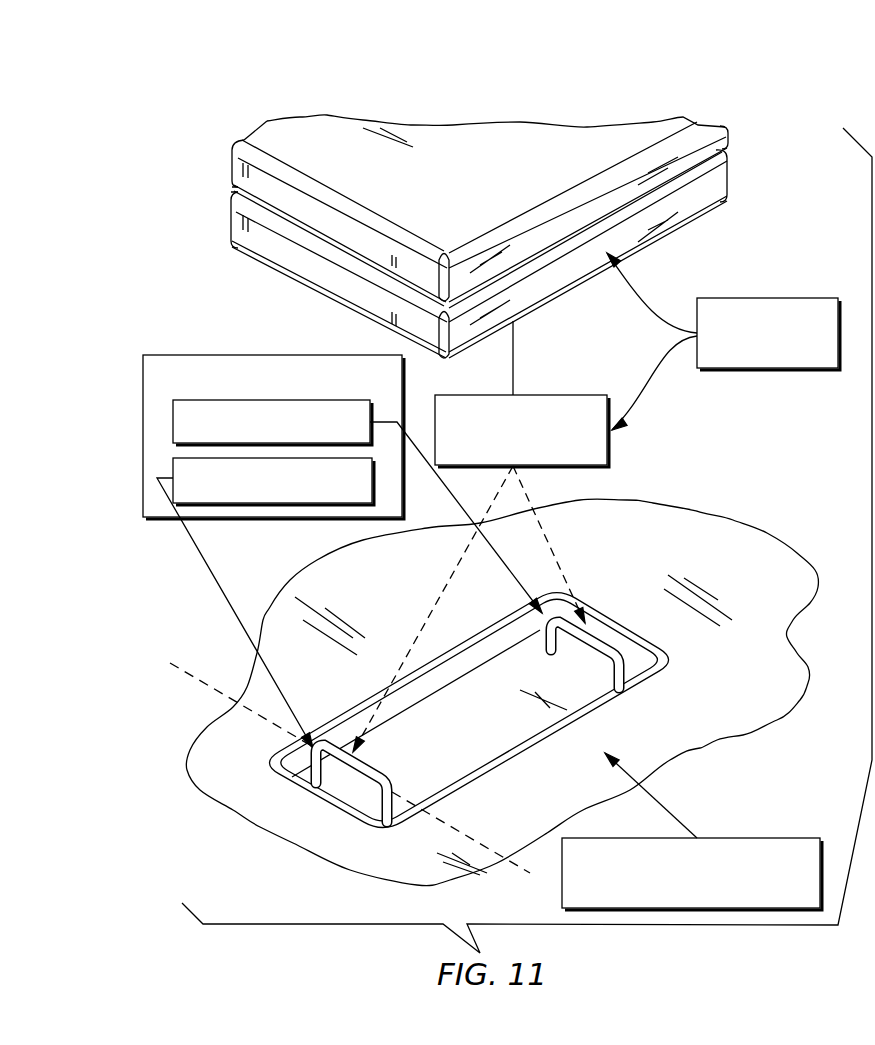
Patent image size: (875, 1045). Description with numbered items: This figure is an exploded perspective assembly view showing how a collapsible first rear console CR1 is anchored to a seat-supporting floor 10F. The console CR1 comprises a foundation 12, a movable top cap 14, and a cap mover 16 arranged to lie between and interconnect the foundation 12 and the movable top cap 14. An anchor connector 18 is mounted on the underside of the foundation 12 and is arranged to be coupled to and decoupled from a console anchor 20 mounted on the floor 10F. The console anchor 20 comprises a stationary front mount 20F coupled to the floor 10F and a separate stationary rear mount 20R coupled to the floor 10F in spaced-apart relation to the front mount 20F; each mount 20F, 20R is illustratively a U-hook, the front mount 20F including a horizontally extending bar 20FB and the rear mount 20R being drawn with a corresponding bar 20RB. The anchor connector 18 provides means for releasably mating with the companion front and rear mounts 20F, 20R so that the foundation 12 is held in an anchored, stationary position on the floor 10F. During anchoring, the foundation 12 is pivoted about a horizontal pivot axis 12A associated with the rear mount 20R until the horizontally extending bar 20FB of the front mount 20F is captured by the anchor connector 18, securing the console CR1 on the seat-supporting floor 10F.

The movable top cap 14 is at (247, 127).
The cap mover 16 is at (231, 189).
The foundation 12 is at (228, 227).
The console anchor 20 is at (203, 355).
The front mount 20F is at (173, 437).
The rear mount 20R is at (237, 503).
The anchor connector 18 is at (548, 395).
The first rear console CR1 is at (767, 298).
The horizontally extending bar 20FB is at (602, 642).
The rear bracket 20RB is at (368, 777).
The horizontal pivot axis 12A is at (198, 679).
The seat-supporting floor 10F is at (755, 838).